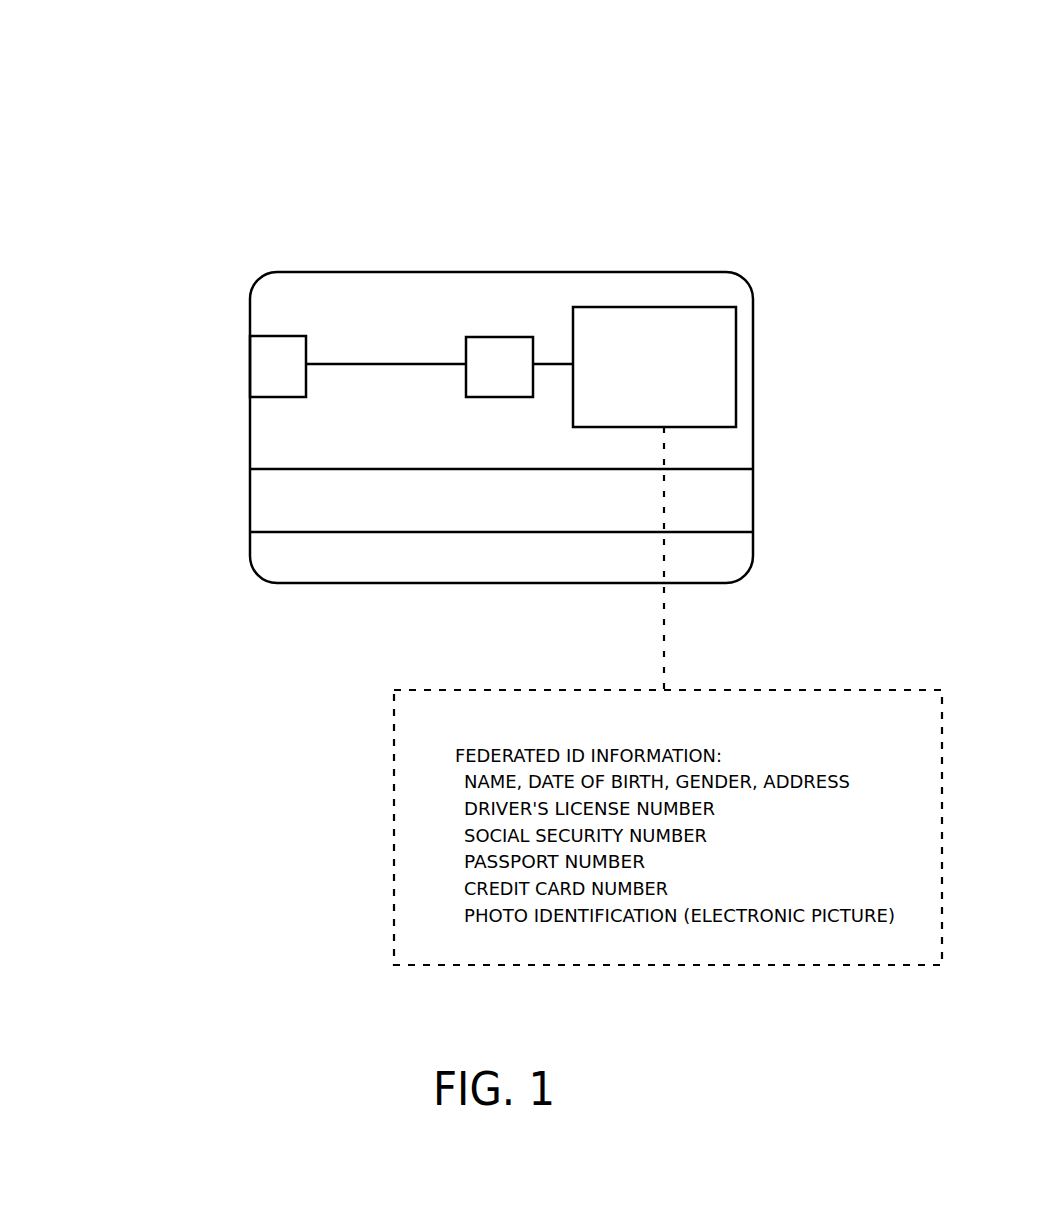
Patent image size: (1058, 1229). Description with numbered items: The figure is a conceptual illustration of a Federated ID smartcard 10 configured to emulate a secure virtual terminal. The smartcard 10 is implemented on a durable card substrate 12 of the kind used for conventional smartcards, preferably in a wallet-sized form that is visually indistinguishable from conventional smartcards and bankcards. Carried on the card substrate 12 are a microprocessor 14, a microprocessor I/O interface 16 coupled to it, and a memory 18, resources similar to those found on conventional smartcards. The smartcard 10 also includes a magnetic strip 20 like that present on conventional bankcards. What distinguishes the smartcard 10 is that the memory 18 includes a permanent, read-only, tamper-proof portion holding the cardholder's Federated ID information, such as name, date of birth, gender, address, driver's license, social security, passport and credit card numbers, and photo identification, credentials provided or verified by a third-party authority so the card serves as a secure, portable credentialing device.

The Federated ID smartcard 10 is at (498, 297).
The card substrate 12 is at (400, 427).
The microprocessor 14 is at (422, 283).
The microprocessor I/O interface 16 is at (199, 270).
The memory 18 is at (726, 286).
The magnetic strip 20 is at (599, 438).